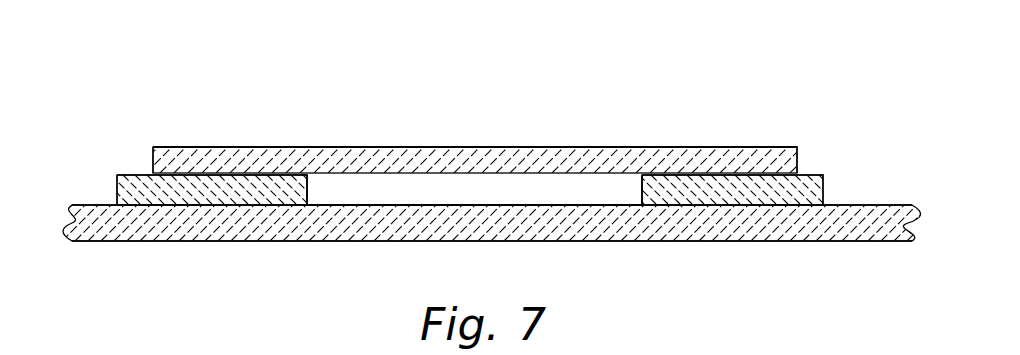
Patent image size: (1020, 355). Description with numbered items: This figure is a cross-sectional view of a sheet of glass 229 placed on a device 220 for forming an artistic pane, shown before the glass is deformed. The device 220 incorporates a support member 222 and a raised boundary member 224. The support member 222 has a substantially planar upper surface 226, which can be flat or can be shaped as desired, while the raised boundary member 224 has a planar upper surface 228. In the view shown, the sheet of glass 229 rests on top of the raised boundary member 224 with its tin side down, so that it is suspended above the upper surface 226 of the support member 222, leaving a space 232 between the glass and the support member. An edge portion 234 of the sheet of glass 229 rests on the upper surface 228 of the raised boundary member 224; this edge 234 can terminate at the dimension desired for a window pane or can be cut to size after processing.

The device 220 is at (84, 160).
The support member 222 is at (218, 242).
The raised boundary member 224 is at (128, 175).
The upper surface 226 is at (383, 191).
The upper surface 228 is at (218, 153).
The sheet of glass 229 is at (296, 147).
The cavity 232 is at (453, 192).
The edge portion 234 is at (198, 147).